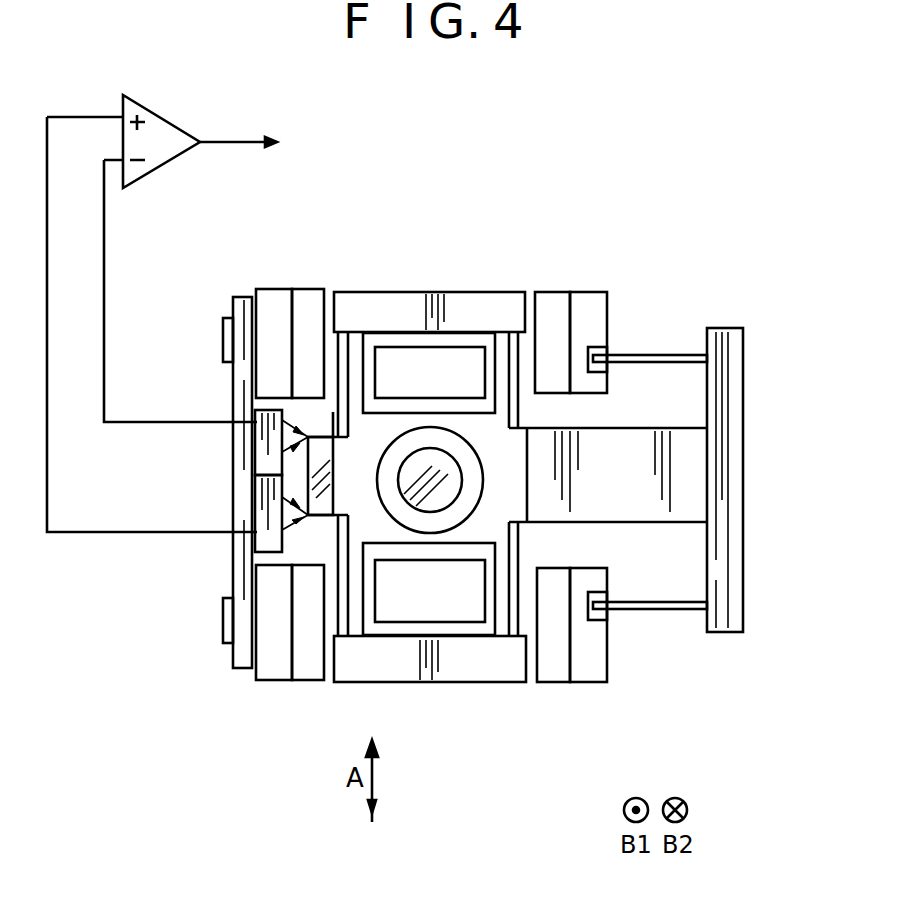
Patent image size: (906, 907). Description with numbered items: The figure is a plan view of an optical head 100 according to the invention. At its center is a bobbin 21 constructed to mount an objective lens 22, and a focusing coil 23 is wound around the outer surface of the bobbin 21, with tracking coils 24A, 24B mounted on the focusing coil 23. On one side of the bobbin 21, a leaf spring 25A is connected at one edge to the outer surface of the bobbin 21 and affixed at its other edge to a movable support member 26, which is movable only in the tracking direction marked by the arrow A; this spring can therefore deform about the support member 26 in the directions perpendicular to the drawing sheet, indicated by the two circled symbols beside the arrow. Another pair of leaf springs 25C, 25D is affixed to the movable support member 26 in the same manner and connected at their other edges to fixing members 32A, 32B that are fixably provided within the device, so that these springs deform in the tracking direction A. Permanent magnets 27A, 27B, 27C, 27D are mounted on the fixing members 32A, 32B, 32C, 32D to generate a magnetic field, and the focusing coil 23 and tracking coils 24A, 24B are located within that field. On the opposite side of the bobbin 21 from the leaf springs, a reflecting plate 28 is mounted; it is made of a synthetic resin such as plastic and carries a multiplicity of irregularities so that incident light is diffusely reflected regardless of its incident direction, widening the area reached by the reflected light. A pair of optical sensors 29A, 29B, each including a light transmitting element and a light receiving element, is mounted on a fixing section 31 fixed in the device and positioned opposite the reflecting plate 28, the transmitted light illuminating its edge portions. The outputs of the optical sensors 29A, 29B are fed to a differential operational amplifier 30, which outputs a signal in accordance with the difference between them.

The optical head 100 is at (650, 238).
The differential operational amplifier 30 is at (174, 122).
The fixing section 31 is at (236, 302).
The bobbin 21 is at (480, 432).
The objective lens 22 is at (450, 486).
The focusing coil 23 is at (352, 340).
The tracking coil 24A is at (338, 328).
The tracking coil 24B is at (378, 655).
The leaf spring 25A is at (690, 478).
The leaf spring 25C is at (663, 352).
The leaf spring 25D is at (672, 612).
The movable support member 26 is at (730, 412).
The permanent magnet 27A is at (553, 302).
The permanent magnet 27B is at (312, 297).
The permanent magnet 27C is at (308, 662).
The permanent magnet 27D is at (553, 657).
The reflecting plate 28 is at (326, 503).
The optical sensor 29A is at (265, 447).
The optical sensor 29B is at (265, 507).
The fixing member 32A is at (587, 305).
The fixing member 32B is at (278, 297).
The fixing member 32C is at (272, 655).
The fixing member 32D is at (590, 643).